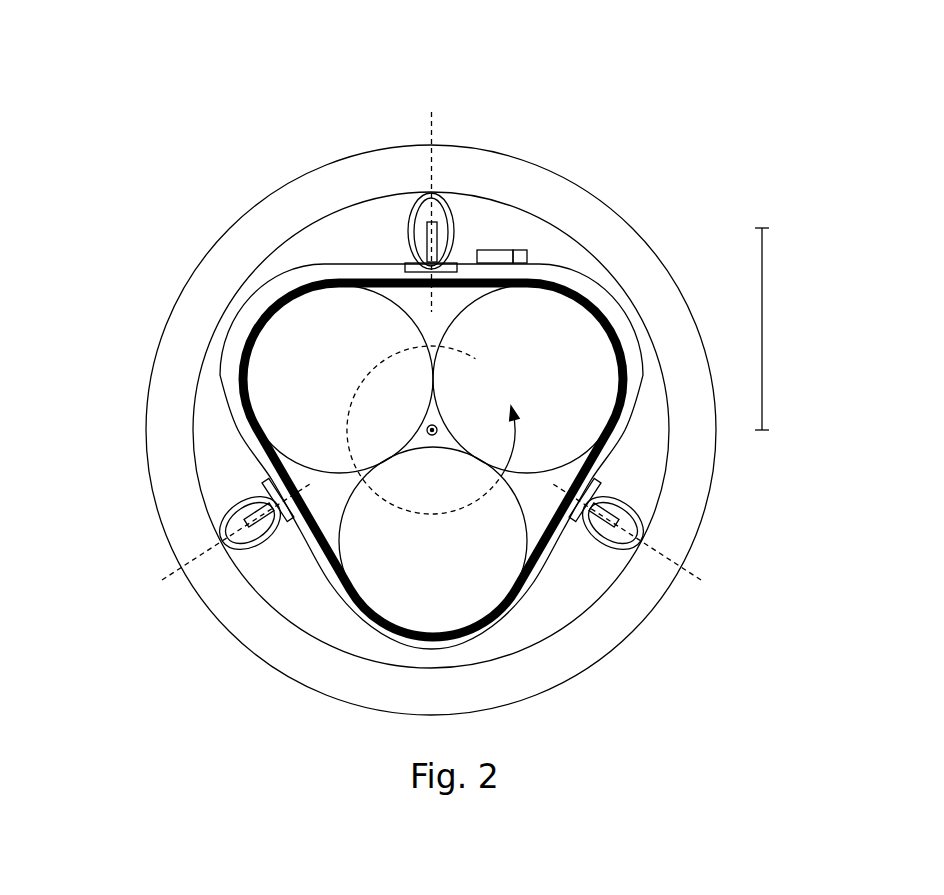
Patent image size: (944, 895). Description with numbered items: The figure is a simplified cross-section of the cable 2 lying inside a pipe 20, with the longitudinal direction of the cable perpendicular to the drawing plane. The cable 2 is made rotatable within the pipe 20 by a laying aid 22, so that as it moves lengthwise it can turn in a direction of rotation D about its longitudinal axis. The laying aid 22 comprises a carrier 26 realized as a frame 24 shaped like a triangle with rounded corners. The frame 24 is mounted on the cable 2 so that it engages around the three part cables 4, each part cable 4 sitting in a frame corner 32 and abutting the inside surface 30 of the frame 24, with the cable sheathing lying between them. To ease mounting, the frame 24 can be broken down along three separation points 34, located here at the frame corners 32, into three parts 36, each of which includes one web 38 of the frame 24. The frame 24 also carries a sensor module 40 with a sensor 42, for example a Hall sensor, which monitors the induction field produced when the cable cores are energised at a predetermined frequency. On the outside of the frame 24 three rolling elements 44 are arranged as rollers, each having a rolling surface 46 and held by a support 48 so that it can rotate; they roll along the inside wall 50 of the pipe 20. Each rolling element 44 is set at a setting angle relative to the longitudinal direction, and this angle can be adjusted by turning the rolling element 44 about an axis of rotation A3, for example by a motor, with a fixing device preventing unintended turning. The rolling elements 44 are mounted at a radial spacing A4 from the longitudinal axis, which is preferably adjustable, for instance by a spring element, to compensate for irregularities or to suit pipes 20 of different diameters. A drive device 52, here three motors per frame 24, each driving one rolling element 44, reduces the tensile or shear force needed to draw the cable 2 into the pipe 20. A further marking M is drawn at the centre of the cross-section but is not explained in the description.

The cable 2 is at (494, 423).
The part cable 4 is at (458, 511).
The pipe 20 is at (431, 387).
The laying aid 22 is at (342, 434).
The frame 24 is at (510, 375).
The carrier 26 is at (433, 460).
The inside surface 30 is at (510, 375).
The frame corner 32 is at (383, 434).
The separation point 34 is at (454, 440).
The part 36 is at (336, 515).
The web 38 is at (336, 456).
The sensor module 40 is at (474, 135).
The sensor 42 is at (500, 135).
The rolling element 44 is at (240, 51).
The rolling surface 46 is at (373, 139).
The support 48 is at (332, 167).
The inside wall 50 is at (517, 430).
The drive device 52 is at (392, 328).
The axis of rotation A3 is at (442, 330).
The spacing A4 is at (811, 313).
The direction of rotation D is at (340, 552).
The cable center M is at (328, 522).